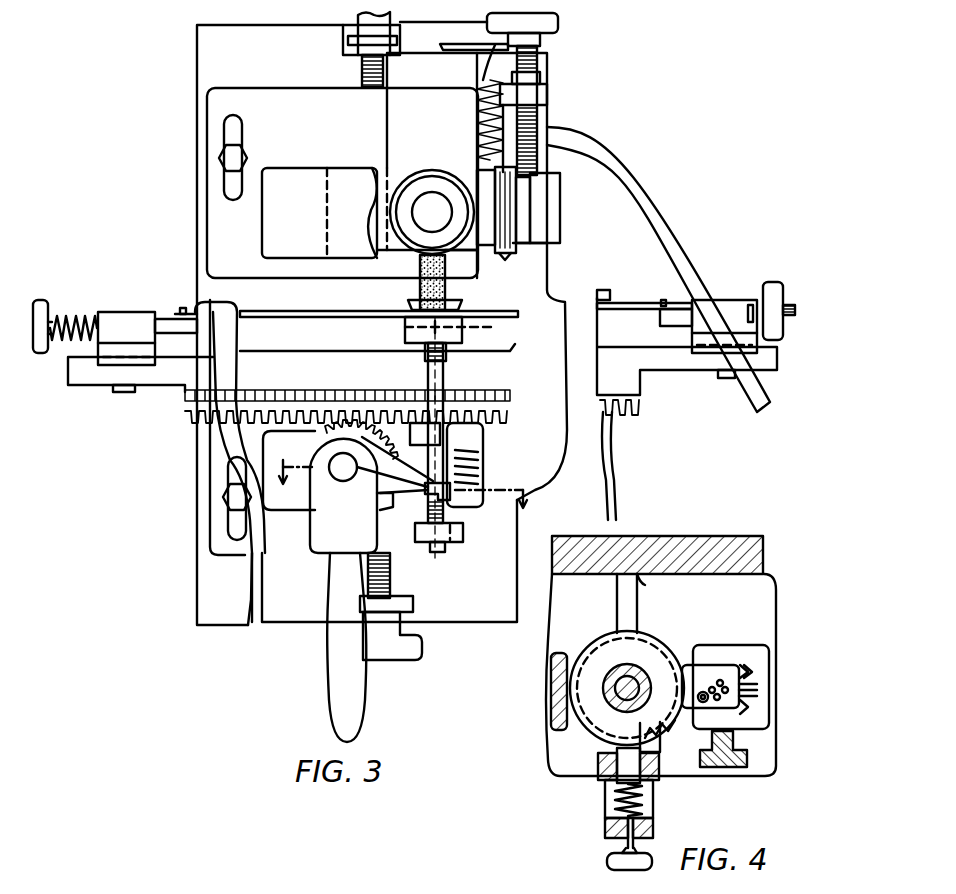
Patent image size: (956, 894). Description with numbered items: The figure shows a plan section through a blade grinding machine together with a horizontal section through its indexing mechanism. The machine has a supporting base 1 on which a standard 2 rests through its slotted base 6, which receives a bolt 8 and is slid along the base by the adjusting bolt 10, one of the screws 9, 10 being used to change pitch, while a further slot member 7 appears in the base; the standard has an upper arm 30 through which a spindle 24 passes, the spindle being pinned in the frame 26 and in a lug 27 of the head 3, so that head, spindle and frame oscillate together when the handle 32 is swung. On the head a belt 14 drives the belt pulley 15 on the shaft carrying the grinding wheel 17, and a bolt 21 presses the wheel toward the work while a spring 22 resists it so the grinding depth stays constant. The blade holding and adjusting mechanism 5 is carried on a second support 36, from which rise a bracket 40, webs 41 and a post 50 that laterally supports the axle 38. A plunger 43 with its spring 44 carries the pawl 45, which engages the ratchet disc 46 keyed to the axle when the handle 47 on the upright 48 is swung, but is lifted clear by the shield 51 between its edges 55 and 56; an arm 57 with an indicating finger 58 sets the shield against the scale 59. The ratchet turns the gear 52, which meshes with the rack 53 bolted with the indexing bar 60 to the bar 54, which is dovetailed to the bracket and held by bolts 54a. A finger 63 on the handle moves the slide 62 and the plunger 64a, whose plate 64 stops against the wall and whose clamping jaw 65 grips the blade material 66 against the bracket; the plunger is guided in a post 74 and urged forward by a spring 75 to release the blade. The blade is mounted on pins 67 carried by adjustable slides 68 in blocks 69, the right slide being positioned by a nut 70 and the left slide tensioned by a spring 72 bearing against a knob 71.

In FIG. 3, the supporting base 1 is at (246, 615).
In FIG. 3, the supporting standard 2 is at (300, 240).
In FIG. 3, the head 3 is at (378, 240).
In FIG. 3, the blade holding and adjusting mechanism 5 is at (406, 473).
In FIG. 3, the base of the standard 6 is at (228, 240).
In FIG. 3, the slot 7 is at (232, 190).
In FIG. 3, the bolt 8 is at (224, 158).
In FIG. 3, the screw 9 is at (390, 650).
In FIG. 3, the bolt 10 is at (343, 67).
In FIG. 3, the belt 14 is at (508, 259).
In FIG. 3, the belt pulley 15 is at (520, 213).
In FIG. 3, the grinding wheel 17 is at (420, 291).
In FIG. 3, the bolt 21 is at (560, 22).
In FIG. 3, the spring 22 is at (540, 112).
In FIG. 3, the spindle 24 is at (432, 212).
In FIG. 3, the frame 26 is at (412, 88).
In FIG. 3, the lug 27 is at (432, 172).
In FIG. 3, the upper arm of the standard 30 is at (357, 173).
In FIG. 3, the handle 32 is at (752, 390).
In FIG. 3, the support 36 is at (225, 447).
In FIG. 3, the axle 38 is at (343, 482).
In FIG. 4, the axle 38 is at (628, 676).
In FIG. 4, the bracket 40 is at (680, 536).
In FIG. 4, the webs 41 is at (628, 607).
In FIG. 4, the plunger 43 is at (608, 831).
In FIG. 4, the spring 44 is at (615, 800).
In FIG. 4, the head or pawl 45 is at (613, 768).
In FIG. 4, the ratchet disc 46 is at (656, 746).
In FIG. 3, the handle 47 is at (335, 698).
In FIG. 4, the upright 48 is at (648, 777).
In FIG. 3, the post 50 is at (288, 489).
In FIG. 4, the post 50 is at (565, 702).
In FIG. 4, the shield 51 is at (670, 650).
In FIG. 3, the gear 52 is at (345, 418).
In FIG. 3, the rack 53 is at (502, 414).
In FIG. 4, the rack 53 is at (757, 680).
In FIG. 3, the bar 54 is at (676, 360).
In FIG. 3, the bolts 54a is at (120, 393).
In FIG. 4, the edge 55 is at (660, 722).
In FIG. 4, the edge 56 is at (650, 762).
In FIG. 3, the arm 57 is at (425, 488).
In FIG. 4, the arm 57 is at (707, 672).
In FIG. 3, the indicating finger 58 is at (470, 474).
In FIG. 4, the indicating finger 58 is at (757, 692).
In FIG. 3, the scale 59 is at (475, 453).
In FIG. 4, the scale 59 is at (747, 648).
In FIG. 3, the indexing bar 60 is at (455, 392).
In FIG. 3, the slide 62 is at (441, 437).
In FIG. 3, the finger 63 is at (448, 490).
In FIG. 3, the plate 64 is at (440, 387).
In FIG. 3, the plunger 64a is at (470, 566).
In FIG. 3, the clamping jaw 65 is at (462, 305).
In FIG. 3, the blade material 66 is at (298, 304).
In FIG. 3, the pins 67 is at (182, 308).
In FIG. 3, the adjustable slides 68 is at (180, 333).
In FIG. 3, the blocks 69 is at (122, 312).
In FIG. 3, the nut 70 is at (776, 293).
In FIG. 3, the knob 71 is at (40, 300).
In FIG. 3, the spring 72 is at (66, 316).
In FIG. 3, the post 74 is at (463, 533).
In FIG. 3, the spring 75 is at (437, 552).